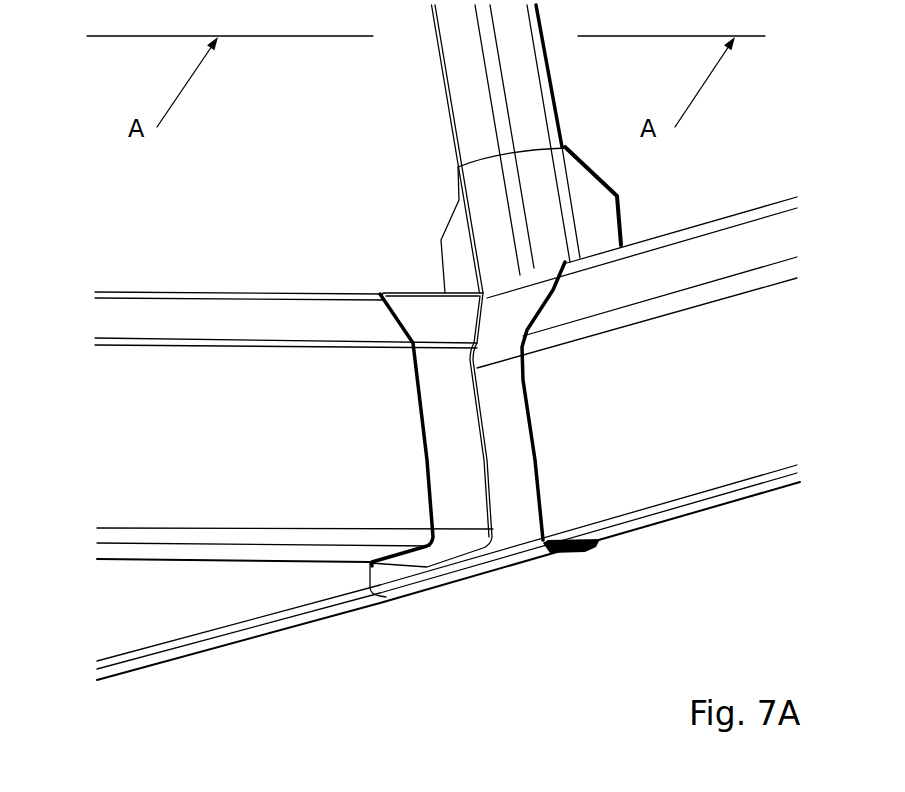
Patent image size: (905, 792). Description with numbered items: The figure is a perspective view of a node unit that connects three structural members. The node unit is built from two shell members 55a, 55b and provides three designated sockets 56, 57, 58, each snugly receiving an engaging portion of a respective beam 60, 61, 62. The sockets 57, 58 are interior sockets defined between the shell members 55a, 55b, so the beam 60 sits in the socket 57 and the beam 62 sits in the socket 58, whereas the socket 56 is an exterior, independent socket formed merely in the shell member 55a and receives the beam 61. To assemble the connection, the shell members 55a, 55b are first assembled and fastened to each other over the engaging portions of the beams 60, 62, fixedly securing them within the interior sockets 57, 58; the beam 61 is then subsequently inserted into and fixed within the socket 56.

The beam 62 is at (450, 88).
The socket 58 is at (486, 150).
The shell member 55a is at (623, 229).
The shell member 55b is at (525, 482).
The socket 56 is at (402, 487).
The socket 57 is at (568, 439).
The beam 60 is at (690, 400).
The beam 61 is at (207, 455).